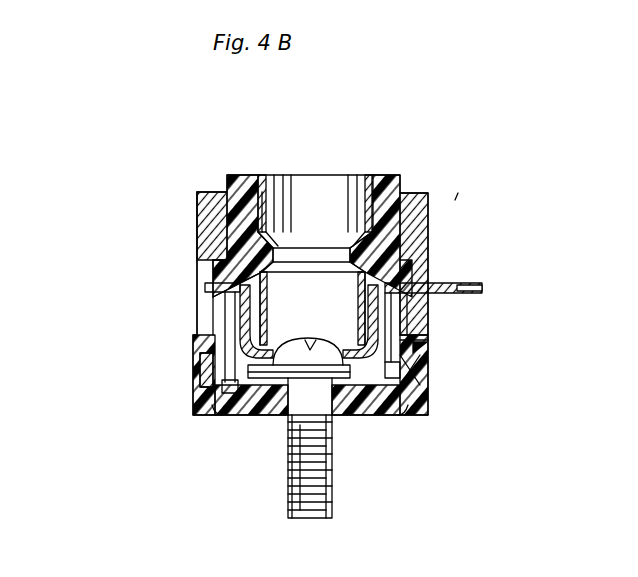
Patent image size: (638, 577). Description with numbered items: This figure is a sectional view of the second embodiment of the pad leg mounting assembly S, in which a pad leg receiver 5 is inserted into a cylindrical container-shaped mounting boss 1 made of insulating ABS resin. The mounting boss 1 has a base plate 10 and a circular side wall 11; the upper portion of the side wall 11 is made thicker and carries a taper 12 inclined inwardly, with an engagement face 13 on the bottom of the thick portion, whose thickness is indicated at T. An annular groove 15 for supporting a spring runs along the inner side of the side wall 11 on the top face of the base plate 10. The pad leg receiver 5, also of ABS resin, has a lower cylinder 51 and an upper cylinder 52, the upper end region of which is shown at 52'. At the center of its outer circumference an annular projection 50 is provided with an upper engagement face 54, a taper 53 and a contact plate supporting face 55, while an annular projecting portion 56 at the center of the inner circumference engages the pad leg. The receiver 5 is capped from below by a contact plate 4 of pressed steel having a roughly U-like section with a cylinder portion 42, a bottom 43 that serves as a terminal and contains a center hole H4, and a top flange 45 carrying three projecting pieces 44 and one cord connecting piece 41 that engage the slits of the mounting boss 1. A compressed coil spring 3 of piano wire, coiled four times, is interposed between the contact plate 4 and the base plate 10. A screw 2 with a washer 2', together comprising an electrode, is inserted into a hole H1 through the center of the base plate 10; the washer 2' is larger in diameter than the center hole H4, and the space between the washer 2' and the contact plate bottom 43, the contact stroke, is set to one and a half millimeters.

The sensor assembly S is at (184, 186).
The upper cap member 52' is at (308, 209).
The upper cylinder 52 is at (263, 176).
The annular projecting portion 56 is at (283, 240).
The lower cylinder 51 is at (320, 295).
The center hole H4 is at (340, 290).
The pad leg receiver 5 is at (394, 177).
The taper 12 is at (413, 200).
The thickness T is at (466, 190).
The engagement face 13 is at (418, 270).
The cord connecting piece 41 is at (450, 283).
The contact plate supporting face 55 is at (420, 307).
The cylinder portion 42 is at (418, 342).
The contact plate 4 is at (432, 345).
The mounting boss 1 is at (432, 364).
The coil spring 3 is at (420, 385).
The annular groove 15 is at (420, 413).
The bottom 43 is at (386, 416).
The base plate 10 is at (348, 415).
The screw 2 is at (290, 430).
The hole H1 is at (300, 430).
The washer 2' is at (190, 407).
The side wall 11 is at (195, 355).
The top flange 45 is at (200, 335).
The projecting pieces 44 is at (205, 290).
The taper 53 is at (235, 278).
The annular projection 50 is at (240, 258).
The upper engagement face 54 is at (222, 222).